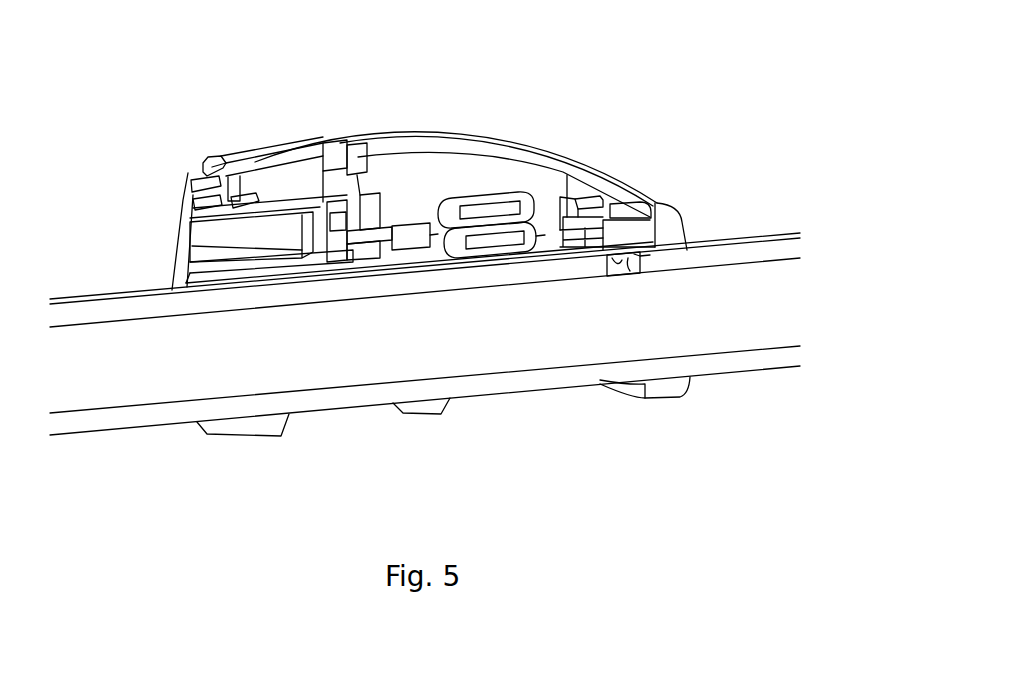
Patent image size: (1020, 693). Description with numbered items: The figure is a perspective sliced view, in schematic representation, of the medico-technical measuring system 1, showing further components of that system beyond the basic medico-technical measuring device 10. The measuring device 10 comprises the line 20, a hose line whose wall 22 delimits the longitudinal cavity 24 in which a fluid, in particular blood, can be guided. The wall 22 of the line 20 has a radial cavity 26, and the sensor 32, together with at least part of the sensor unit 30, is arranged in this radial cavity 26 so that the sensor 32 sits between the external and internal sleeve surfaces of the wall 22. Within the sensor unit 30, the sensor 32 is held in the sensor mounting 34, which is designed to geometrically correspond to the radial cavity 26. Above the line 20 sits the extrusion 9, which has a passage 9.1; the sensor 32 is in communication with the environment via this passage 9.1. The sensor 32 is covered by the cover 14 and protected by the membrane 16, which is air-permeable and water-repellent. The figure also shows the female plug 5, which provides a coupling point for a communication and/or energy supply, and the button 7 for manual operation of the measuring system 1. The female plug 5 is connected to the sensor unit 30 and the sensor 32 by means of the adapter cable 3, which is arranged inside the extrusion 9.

The medico-technical measuring system 1 is at (566, 72).
The adapter cable 3 is at (483, 183).
The female plug 5 is at (203, 233).
The button 7 is at (202, 156).
The extrusion 9 is at (411, 124).
The passage 9.1 is at (595, 172).
The medico-technical measuring device 10 is at (672, 180).
The cover 14 is at (657, 204).
The membrane 16 is at (562, 205).
The line 20 is at (776, 224).
The wall 22 is at (78, 314).
The longitudinal cavity 24 is at (148, 397).
The radial cavity 26 is at (608, 291).
The sensor unit 30 is at (585, 268).
The sensor 32 is at (622, 258).
The sensor mounting 34 is at (640, 256).